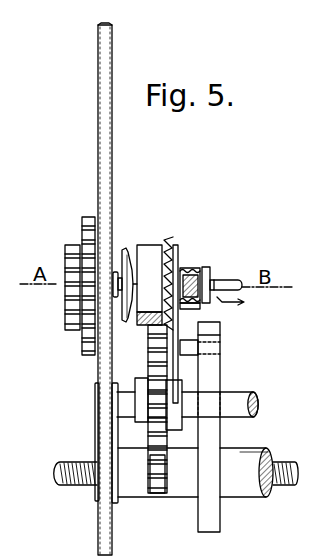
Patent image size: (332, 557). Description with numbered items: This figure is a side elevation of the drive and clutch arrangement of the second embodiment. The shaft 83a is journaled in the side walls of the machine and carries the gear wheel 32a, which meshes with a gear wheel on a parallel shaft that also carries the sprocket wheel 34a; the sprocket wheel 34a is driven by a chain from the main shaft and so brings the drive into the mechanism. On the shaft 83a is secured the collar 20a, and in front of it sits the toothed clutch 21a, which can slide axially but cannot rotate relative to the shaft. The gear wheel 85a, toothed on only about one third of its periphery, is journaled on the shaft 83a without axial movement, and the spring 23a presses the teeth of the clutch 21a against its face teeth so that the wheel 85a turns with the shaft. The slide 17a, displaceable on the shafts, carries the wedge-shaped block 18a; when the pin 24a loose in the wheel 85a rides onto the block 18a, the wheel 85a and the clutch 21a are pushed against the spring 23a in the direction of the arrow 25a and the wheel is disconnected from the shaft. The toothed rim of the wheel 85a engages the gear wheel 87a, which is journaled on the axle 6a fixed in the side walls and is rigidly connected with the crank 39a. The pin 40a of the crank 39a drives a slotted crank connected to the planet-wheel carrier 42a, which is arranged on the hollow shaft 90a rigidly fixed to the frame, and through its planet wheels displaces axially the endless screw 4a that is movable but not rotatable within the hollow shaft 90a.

The gear wheel 32a is at (87, 216).
The sprocket wheel 34a is at (73, 330).
The pin 24a is at (128, 272).
The slide 17a is at (116, 271).
The wedge-shaped block 18a is at (134, 272).
The gear wheel 85a is at (163, 246).
The toothed clutch 21a is at (177, 256).
The collar 20a is at (203, 268).
The shaft 83a is at (232, 279).
The arrow 25a is at (226, 304).
The spring 23a is at (194, 315).
The pin 40a is at (200, 346).
The crank 39a is at (176, 368).
The axle 6a is at (187, 404).
The planet-wheel carrier 42a is at (212, 444).
The gear wheel 87a is at (164, 462).
The hollow shaft 90a is at (262, 450).
The endless screw 4a is at (210, 470).